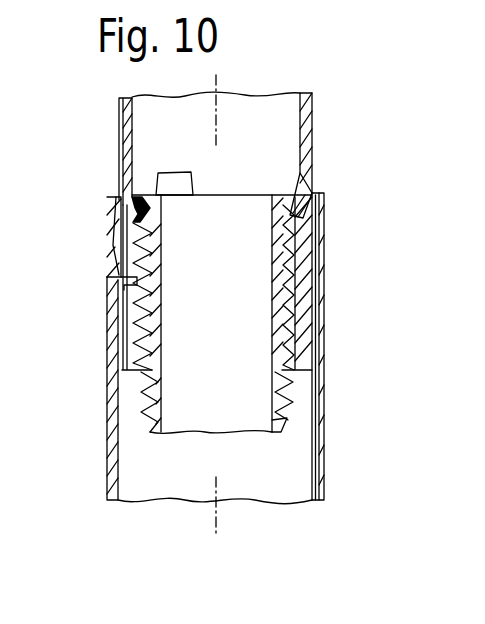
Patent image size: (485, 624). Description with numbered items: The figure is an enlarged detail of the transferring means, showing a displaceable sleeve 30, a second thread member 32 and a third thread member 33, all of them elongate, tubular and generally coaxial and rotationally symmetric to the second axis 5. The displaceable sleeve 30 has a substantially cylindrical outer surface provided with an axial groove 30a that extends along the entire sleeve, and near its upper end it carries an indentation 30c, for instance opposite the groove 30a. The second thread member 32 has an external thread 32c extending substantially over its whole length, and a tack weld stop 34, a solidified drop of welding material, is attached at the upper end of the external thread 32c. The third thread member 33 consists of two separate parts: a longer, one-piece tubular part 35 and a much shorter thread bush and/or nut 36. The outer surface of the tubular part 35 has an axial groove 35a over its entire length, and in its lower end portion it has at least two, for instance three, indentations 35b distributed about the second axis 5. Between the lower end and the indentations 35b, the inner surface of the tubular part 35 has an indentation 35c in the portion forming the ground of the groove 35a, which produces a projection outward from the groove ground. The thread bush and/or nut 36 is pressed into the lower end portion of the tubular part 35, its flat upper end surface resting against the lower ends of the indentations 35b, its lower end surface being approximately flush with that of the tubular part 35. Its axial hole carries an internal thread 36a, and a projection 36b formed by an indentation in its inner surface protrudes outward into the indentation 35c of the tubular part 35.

The second axis 5 is at (227, 82).
The displaceable sleeve 30 is at (110, 463).
The axial groove 30a is at (320, 437).
The indentation 30c is at (110, 270).
The second thread member 32 is at (160, 432).
The external thread 32c is at (283, 422).
The third thread member 33 is at (118, 192).
The tack weld stop 34 is at (137, 187).
The tubular part 35 is at (307, 93).
The axial groove 35a is at (120, 163).
The indentations 35b is at (312, 192).
The indentation 35c is at (125, 300).
The thread bush and/or nut 36 is at (300, 383).
The internal thread 36a is at (283, 350).
The projection 36b is at (122, 287).